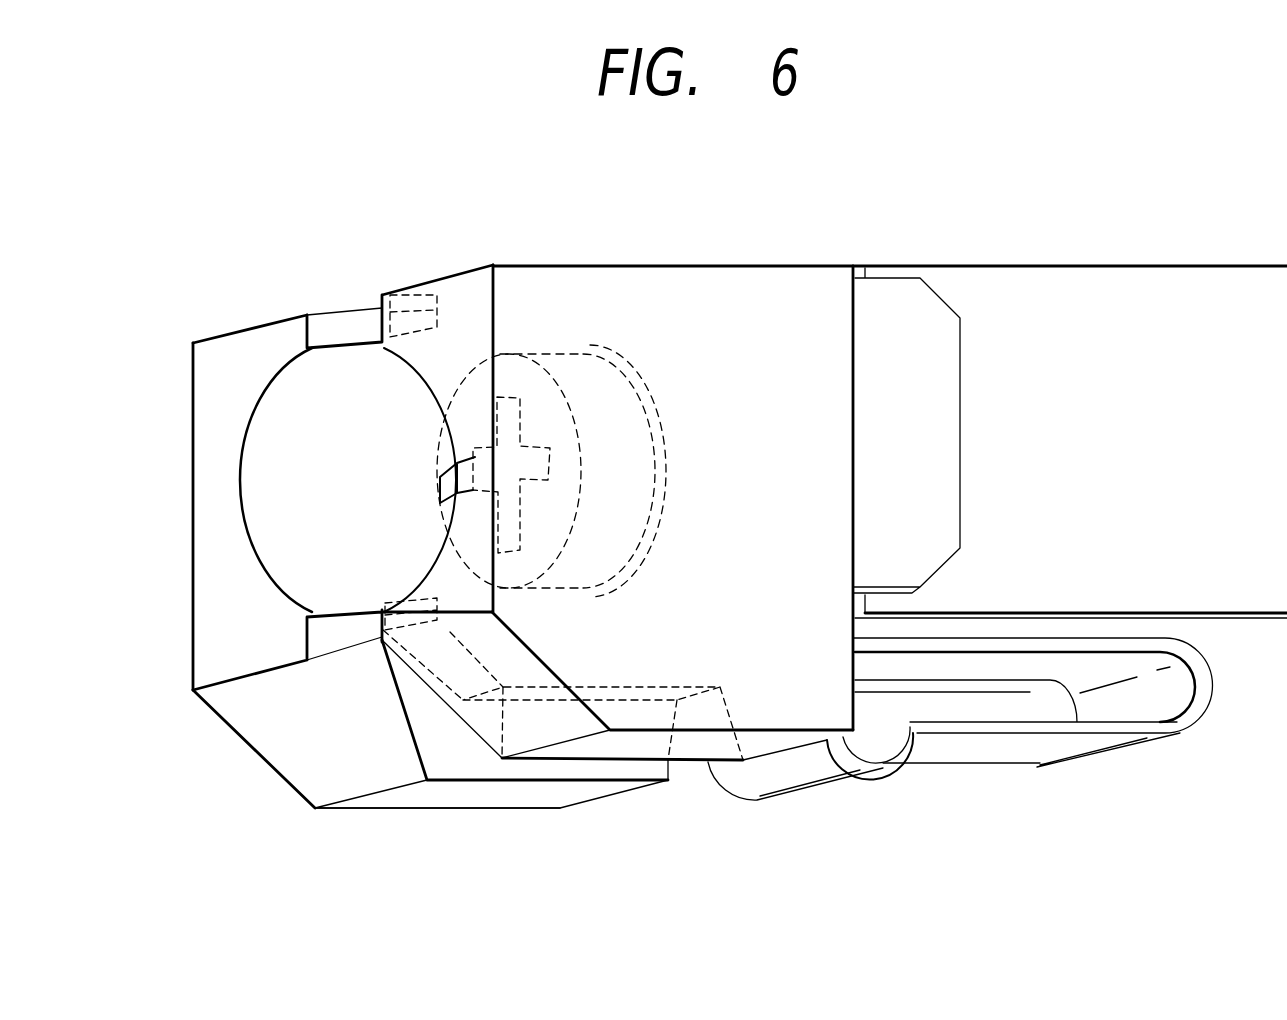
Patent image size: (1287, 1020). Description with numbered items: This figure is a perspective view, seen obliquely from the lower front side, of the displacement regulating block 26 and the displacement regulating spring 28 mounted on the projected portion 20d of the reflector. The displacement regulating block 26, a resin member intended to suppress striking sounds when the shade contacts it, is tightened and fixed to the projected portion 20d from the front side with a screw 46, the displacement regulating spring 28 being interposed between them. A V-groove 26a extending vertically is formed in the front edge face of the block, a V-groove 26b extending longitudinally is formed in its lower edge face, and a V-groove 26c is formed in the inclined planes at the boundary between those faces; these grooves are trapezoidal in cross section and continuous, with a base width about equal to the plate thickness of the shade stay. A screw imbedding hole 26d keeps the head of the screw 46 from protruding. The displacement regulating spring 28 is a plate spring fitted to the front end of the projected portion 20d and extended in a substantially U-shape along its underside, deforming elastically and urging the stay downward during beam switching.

The displacement regulating block 26 is at (257, 318).
The V-groove 26a is at (370, 310).
The V-groove 26b is at (557, 700).
The V-groove 26c is at (440, 662).
The screw imbedding hole 26d is at (263, 452).
The screw 46 is at (427, 460).
The projected portion 20d is at (1188, 290).
The displacement regulating spring 28 is at (987, 776).